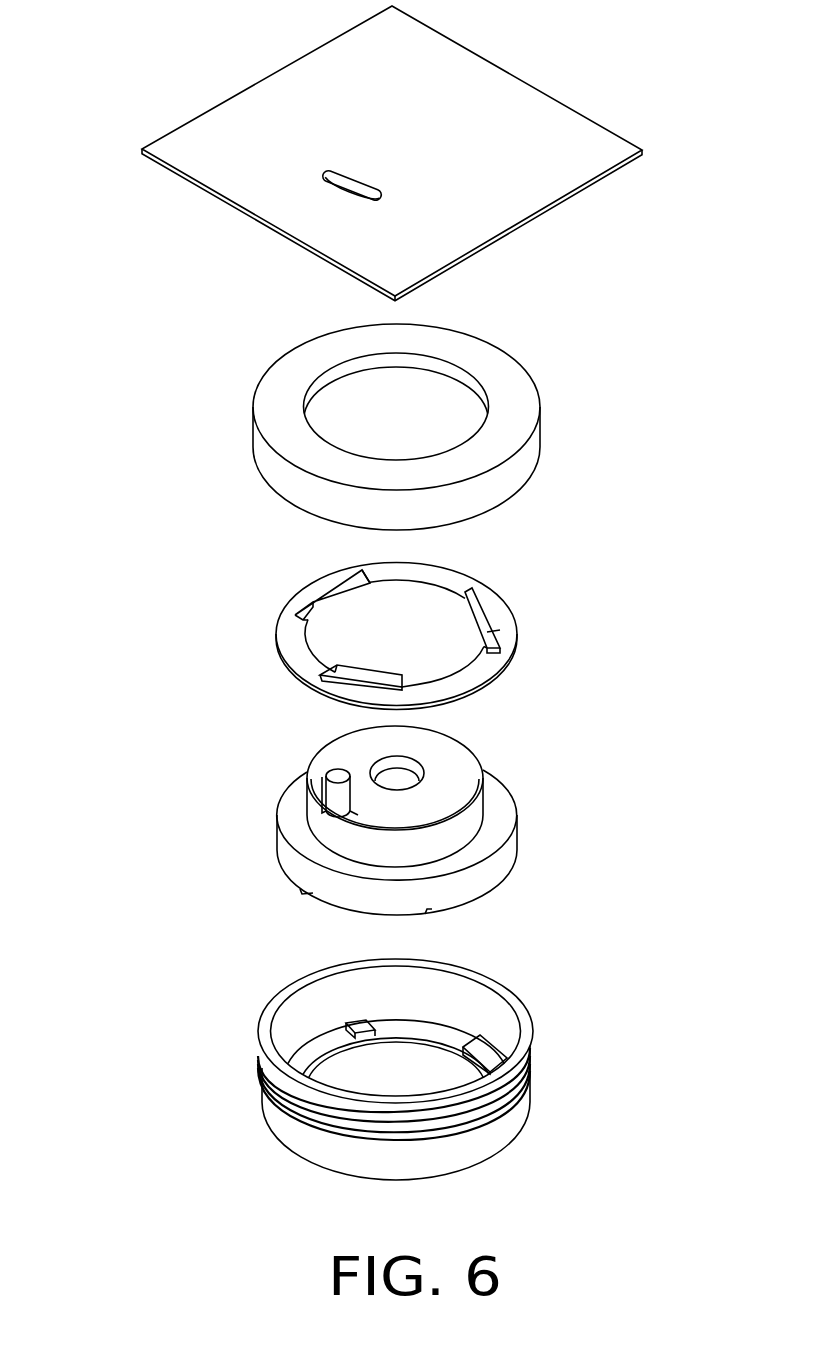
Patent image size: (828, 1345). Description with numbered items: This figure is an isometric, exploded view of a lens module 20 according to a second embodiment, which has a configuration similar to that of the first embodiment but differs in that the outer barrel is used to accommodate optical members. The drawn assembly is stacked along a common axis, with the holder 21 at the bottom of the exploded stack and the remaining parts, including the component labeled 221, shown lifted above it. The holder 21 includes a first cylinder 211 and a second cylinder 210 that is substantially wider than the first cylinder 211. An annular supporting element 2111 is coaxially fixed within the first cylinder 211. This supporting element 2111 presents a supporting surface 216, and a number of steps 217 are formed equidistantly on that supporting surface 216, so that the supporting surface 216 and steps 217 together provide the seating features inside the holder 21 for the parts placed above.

The lens module 20 is at (156, 59).
The holder 21 is at (641, 955).
The second cylinder 210 is at (488, 1013).
The first cylinder 211 is at (512, 1120).
The annular supporting element 2111 is at (378, 1042).
The supporting surface 216 is at (402, 1030).
The steps 217 is at (322, 1038).
The rotor / lens holder base 221 is at (517, 843).